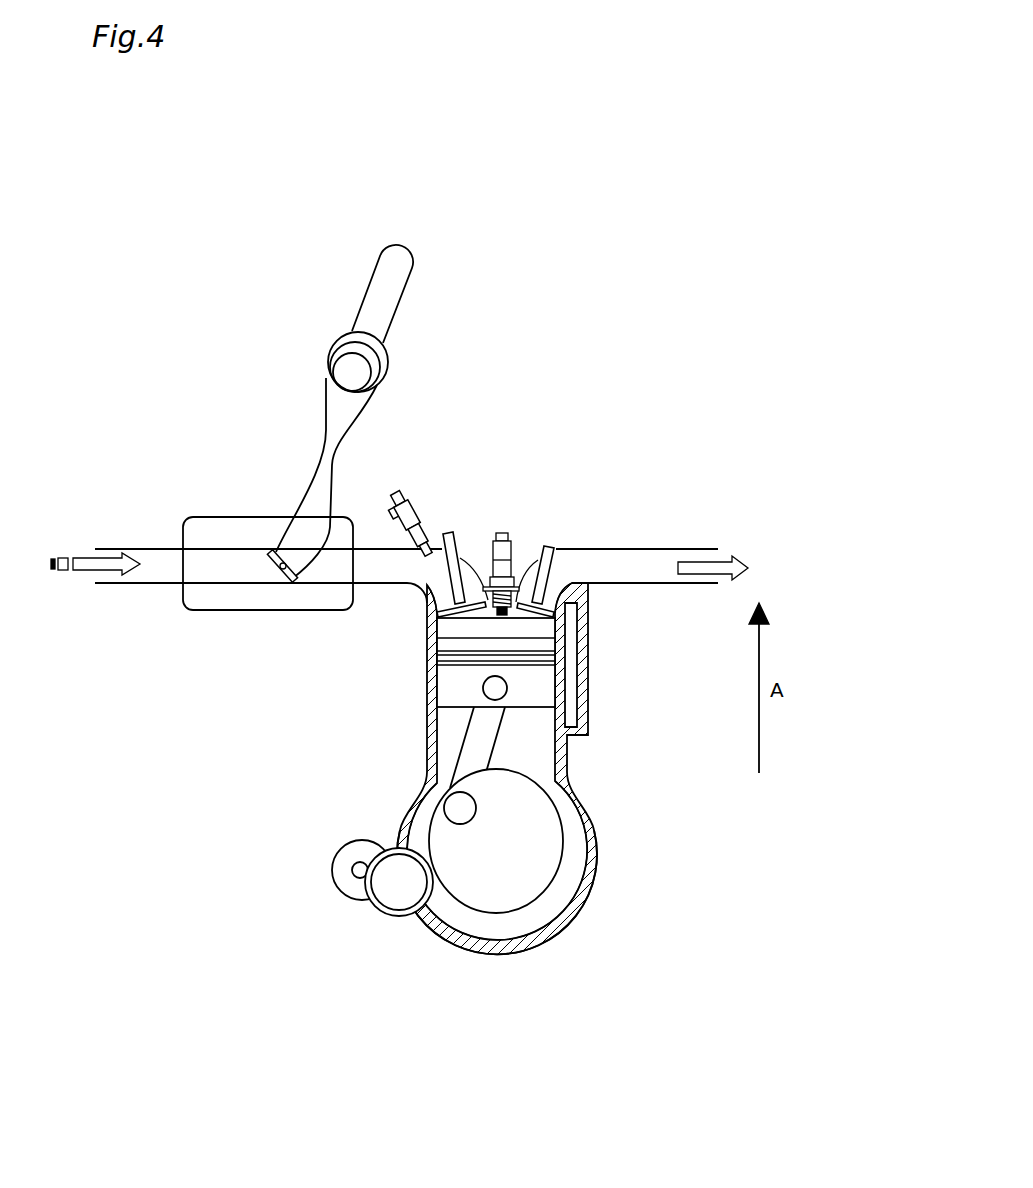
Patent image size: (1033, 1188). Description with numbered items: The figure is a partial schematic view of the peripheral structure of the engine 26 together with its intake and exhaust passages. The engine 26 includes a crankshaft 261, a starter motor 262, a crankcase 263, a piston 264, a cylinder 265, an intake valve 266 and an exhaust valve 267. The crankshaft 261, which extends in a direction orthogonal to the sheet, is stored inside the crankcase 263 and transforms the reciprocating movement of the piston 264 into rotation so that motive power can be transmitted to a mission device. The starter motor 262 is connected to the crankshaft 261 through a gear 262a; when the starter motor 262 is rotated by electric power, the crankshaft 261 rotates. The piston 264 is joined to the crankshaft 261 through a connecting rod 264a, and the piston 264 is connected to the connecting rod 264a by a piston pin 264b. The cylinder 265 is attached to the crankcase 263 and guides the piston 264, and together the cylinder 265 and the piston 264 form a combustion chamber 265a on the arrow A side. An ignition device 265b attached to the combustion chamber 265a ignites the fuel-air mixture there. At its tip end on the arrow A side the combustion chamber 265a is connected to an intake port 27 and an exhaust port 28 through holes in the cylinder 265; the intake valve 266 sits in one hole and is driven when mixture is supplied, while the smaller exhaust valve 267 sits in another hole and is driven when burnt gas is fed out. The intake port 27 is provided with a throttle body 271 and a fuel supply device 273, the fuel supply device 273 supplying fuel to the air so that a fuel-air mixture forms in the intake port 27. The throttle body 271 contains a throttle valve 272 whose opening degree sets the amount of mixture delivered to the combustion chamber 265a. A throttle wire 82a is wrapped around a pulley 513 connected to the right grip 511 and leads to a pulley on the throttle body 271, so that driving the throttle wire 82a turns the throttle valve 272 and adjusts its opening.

The engine 26 is at (583, 802).
The crankshaft 261 is at (533, 863).
The starter motor 262 is at (335, 875).
The gear 262a is at (397, 902).
The crankcase 263 is at (515, 942).
The piston 264 is at (460, 677).
The connecting rod 264a is at (478, 753).
The piston pin 264b is at (490, 690).
The cylinder 265 is at (560, 723).
The combustion chamber 265a is at (543, 625).
The ignition device 265b is at (507, 548).
The intake valve 266 is at (455, 550).
The exhaust valve 267 is at (556, 555).
The intake port 27 is at (182, 565).
The throttle body 271 is at (310, 598).
The throttle valve 272 is at (278, 574).
The fuel supply device 273 is at (412, 527).
The exhaust port 28 is at (660, 563).
The right grip 511 is at (383, 312).
The pulley 513 is at (375, 355).
The throttle wire 82a is at (323, 403).